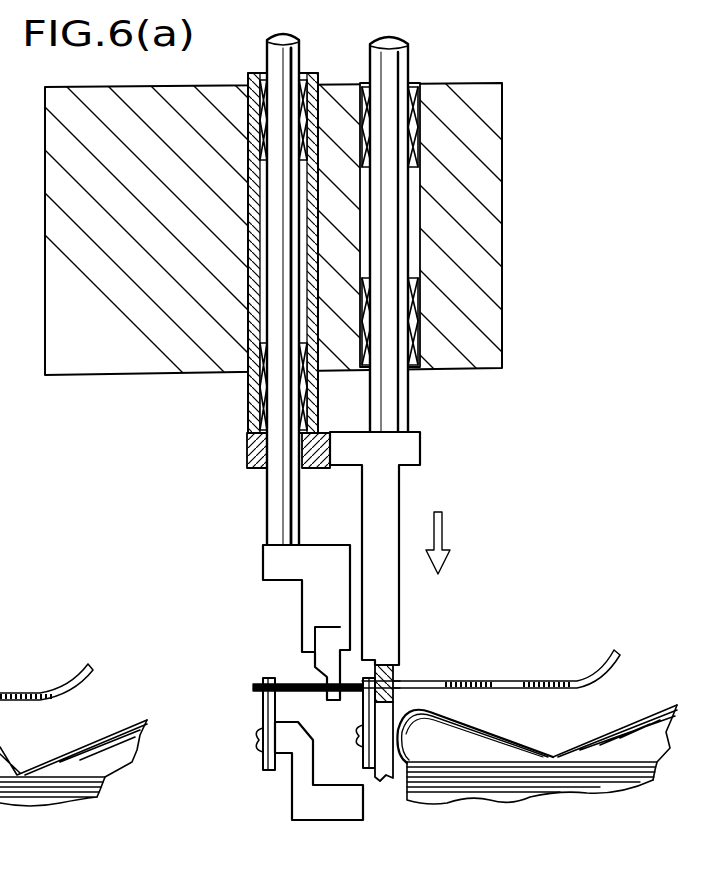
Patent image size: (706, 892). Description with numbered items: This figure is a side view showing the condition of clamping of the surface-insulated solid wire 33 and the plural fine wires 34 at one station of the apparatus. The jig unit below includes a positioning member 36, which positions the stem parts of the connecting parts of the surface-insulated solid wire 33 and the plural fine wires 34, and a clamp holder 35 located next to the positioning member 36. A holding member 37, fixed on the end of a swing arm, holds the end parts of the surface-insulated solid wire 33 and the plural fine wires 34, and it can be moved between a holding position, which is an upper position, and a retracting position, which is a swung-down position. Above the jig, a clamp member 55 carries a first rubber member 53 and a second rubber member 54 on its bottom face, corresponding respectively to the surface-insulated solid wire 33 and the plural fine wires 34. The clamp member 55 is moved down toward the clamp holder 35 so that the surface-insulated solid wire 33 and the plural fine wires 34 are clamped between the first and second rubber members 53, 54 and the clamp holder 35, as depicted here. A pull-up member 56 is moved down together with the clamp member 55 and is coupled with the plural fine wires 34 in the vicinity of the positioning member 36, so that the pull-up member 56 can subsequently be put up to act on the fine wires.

The surface-insulated solid wire 33 is at (523, 728).
The plural fine wires 34 is at (523, 682).
The clamp holder 35 is at (398, 690).
The positioning member 36 is at (362, 698).
The holding member 37 is at (248, 747).
The first rubber member 53 is at (397, 673).
The second rubber member 54 is at (397, 673).
The clamp member 55 is at (387, 516).
The pull-up member 56 is at (327, 632).